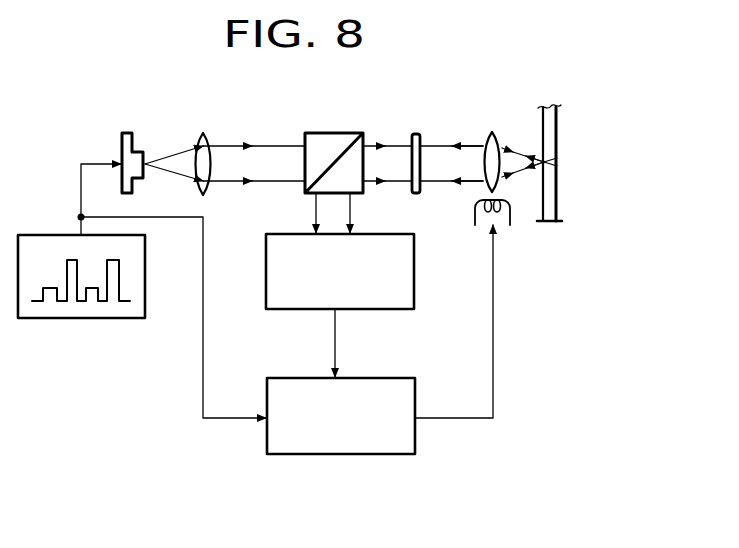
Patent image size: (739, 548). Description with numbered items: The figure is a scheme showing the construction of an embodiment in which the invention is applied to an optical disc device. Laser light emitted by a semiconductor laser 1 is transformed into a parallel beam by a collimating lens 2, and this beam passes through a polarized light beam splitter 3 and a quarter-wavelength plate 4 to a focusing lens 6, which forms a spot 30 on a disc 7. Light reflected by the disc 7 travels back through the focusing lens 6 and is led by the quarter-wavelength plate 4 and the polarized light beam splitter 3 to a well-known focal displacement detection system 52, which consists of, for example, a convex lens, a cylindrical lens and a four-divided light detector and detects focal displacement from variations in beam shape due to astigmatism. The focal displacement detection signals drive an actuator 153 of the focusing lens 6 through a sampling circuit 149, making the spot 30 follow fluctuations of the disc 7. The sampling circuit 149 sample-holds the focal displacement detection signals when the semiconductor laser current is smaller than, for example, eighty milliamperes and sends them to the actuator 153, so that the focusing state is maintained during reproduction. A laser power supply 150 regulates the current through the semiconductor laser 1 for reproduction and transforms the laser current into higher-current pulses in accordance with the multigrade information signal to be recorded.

The semiconductor laser 1 is at (127, 133).
The collimating lens 2 is at (203, 133).
The polarized light beam splitter 3 is at (340, 133).
The quarter-wavelength plate 4 is at (416, 134).
The focusing lens 6 is at (492, 132).
The disc 7 is at (557, 128).
The spot 30 is at (547, 162).
The focal displacement detection system 52 is at (395, 309).
The sampling circuit 149 is at (360, 454).
The power supply 150 is at (63, 318).
The actuator 153 is at (503, 227).